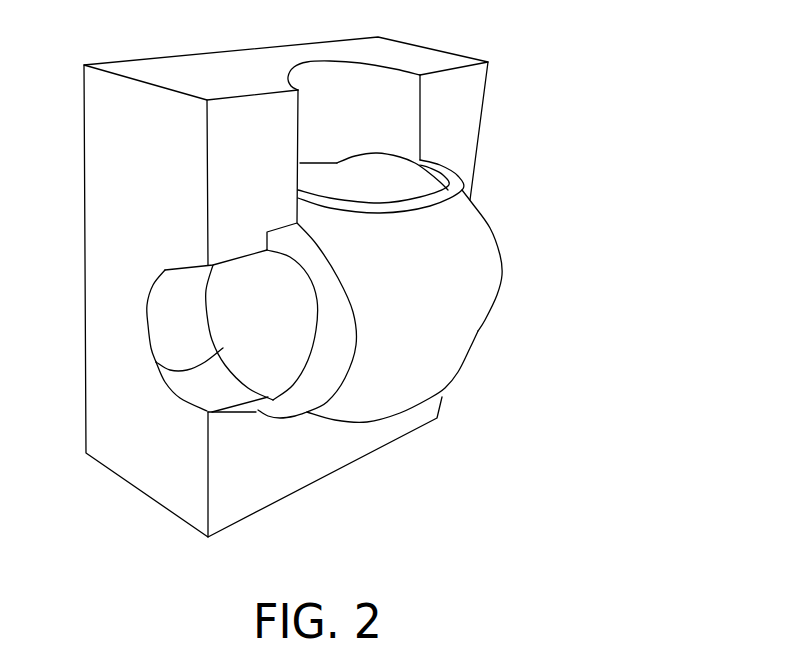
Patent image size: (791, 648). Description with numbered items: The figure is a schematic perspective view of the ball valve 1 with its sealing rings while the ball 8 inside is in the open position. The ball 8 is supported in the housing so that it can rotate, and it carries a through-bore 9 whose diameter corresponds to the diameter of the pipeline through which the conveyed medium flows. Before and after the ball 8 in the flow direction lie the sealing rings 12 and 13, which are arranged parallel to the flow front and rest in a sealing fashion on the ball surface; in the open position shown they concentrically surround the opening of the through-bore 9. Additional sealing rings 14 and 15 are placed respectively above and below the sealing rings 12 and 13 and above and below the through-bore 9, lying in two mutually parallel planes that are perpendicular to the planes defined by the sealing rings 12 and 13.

The ball valve 1 is at (573, 84).
The ball 8 is at (465, 372).
The through-bore 9 is at (157, 362).
The sealing ring 12 is at (277, 422).
The sealing ring 13 is at (506, 270).
The additional sealing ring 14 is at (492, 222).
The additional sealing ring 15 is at (392, 433).